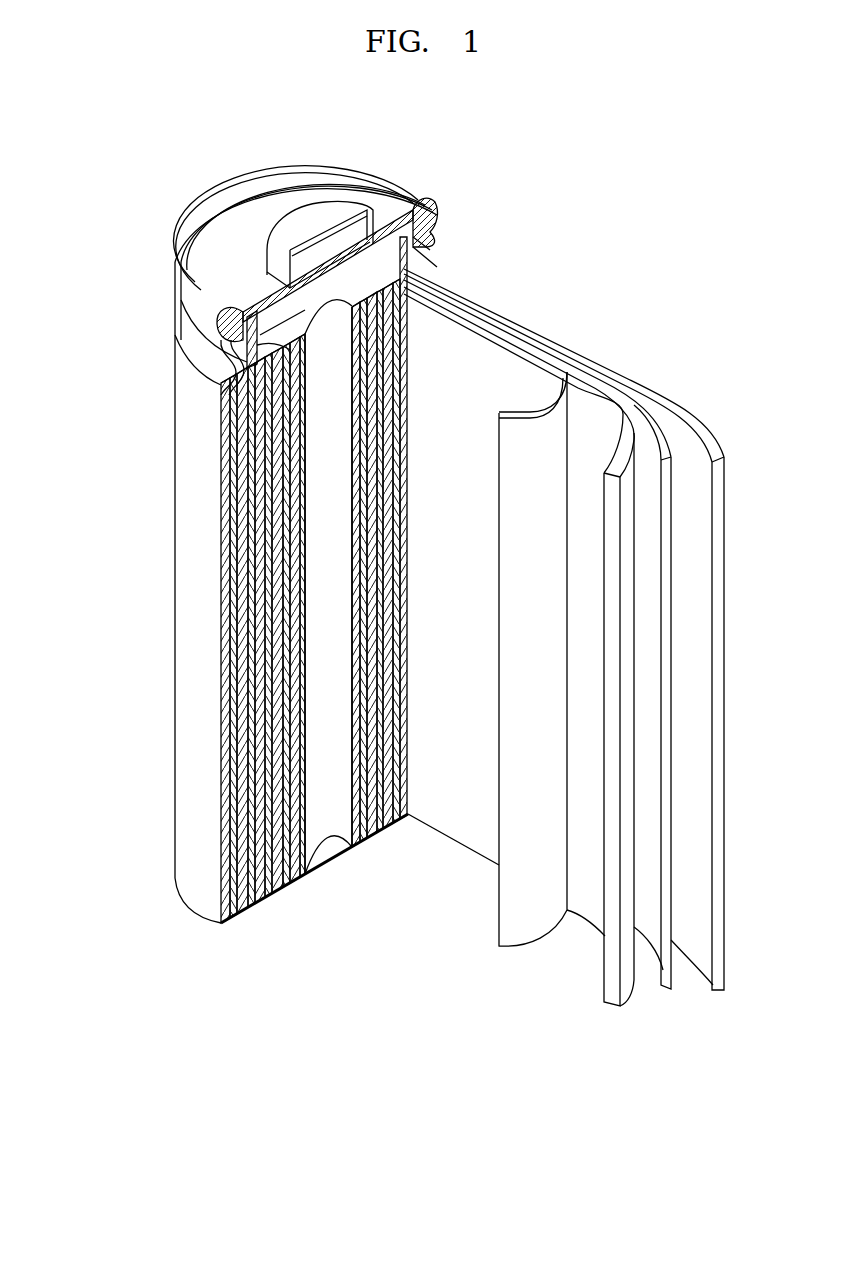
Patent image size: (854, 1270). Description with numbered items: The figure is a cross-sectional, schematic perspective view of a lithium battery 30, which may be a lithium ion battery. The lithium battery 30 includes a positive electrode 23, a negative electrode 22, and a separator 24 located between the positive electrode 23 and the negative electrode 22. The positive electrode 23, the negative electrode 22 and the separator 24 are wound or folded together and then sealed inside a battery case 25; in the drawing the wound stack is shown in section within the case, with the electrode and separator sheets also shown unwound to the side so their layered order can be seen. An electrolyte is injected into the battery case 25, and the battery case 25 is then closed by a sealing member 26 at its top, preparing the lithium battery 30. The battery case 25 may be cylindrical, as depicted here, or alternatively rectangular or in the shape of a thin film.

The lithium battery 30 is at (387, 110).
The negative electrode 22 is at (697, 422).
The positive electrode 23 is at (620, 420).
The separator 24 is at (535, 415).
The battery case 25 is at (182, 592).
The sealing member 26 is at (300, 213).